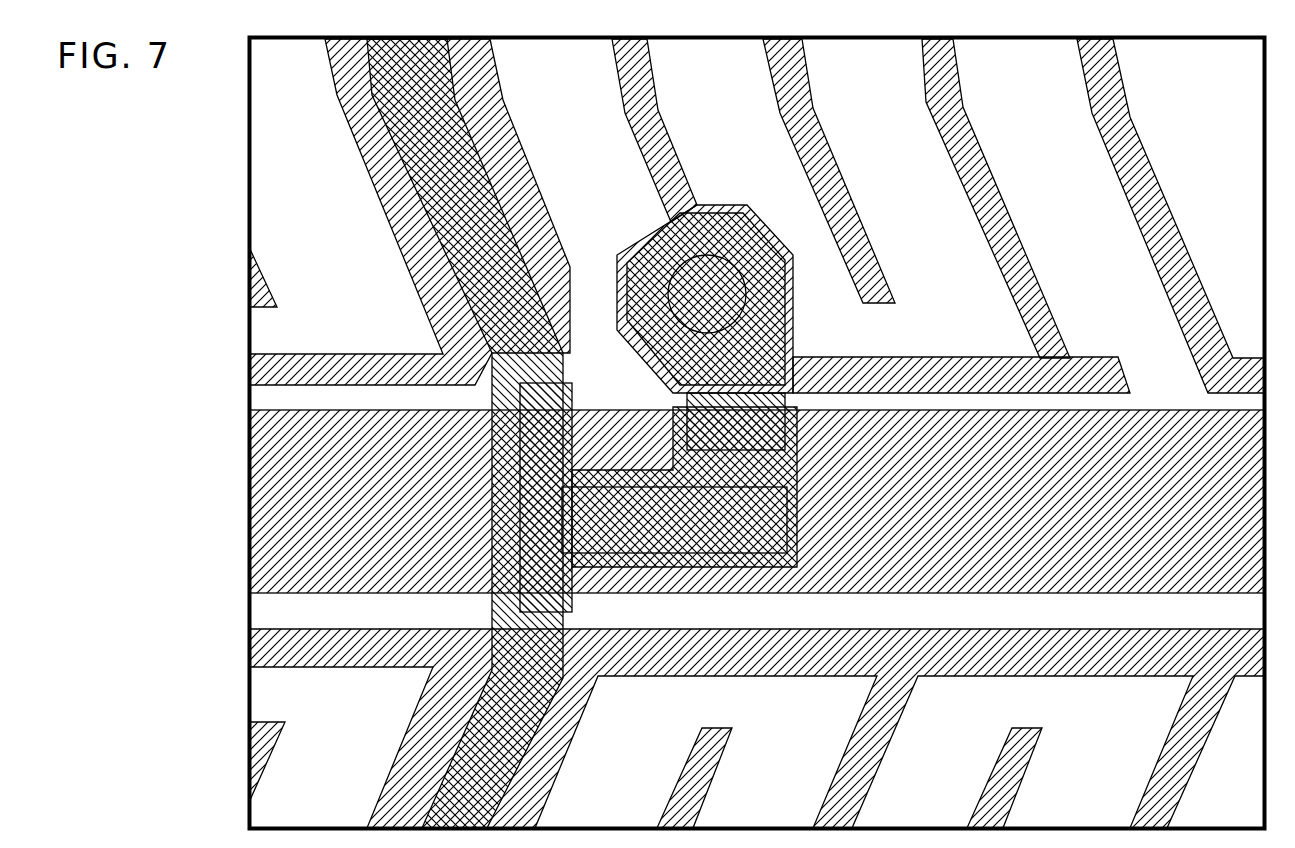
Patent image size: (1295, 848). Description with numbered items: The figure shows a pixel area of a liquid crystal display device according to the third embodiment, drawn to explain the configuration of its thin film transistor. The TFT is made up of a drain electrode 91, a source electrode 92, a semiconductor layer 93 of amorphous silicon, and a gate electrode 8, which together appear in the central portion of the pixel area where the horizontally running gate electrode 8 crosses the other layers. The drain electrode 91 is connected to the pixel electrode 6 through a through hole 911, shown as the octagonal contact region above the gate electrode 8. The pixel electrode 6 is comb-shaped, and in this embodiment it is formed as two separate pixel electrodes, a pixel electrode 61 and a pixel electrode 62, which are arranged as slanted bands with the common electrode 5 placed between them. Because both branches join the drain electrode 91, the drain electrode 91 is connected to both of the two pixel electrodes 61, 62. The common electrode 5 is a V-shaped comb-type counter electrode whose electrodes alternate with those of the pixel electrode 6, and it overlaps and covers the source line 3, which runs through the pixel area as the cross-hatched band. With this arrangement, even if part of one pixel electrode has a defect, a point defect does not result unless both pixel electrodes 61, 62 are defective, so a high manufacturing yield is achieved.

The source line 3 is at (530, 720).
The common electrode 5 is at (497, 103).
The pixel electrode 6 is at (718, 728).
The pixel electrode 61 is at (655, 112).
The pixel electrode 62 is at (982, 138).
The gate electrode 8 is at (1132, 408).
The drain electrode 91 is at (788, 388).
The through hole 911 is at (787, 300).
The source electrode 92 is at (753, 550).
The semiconductor layer 93 is at (797, 475).